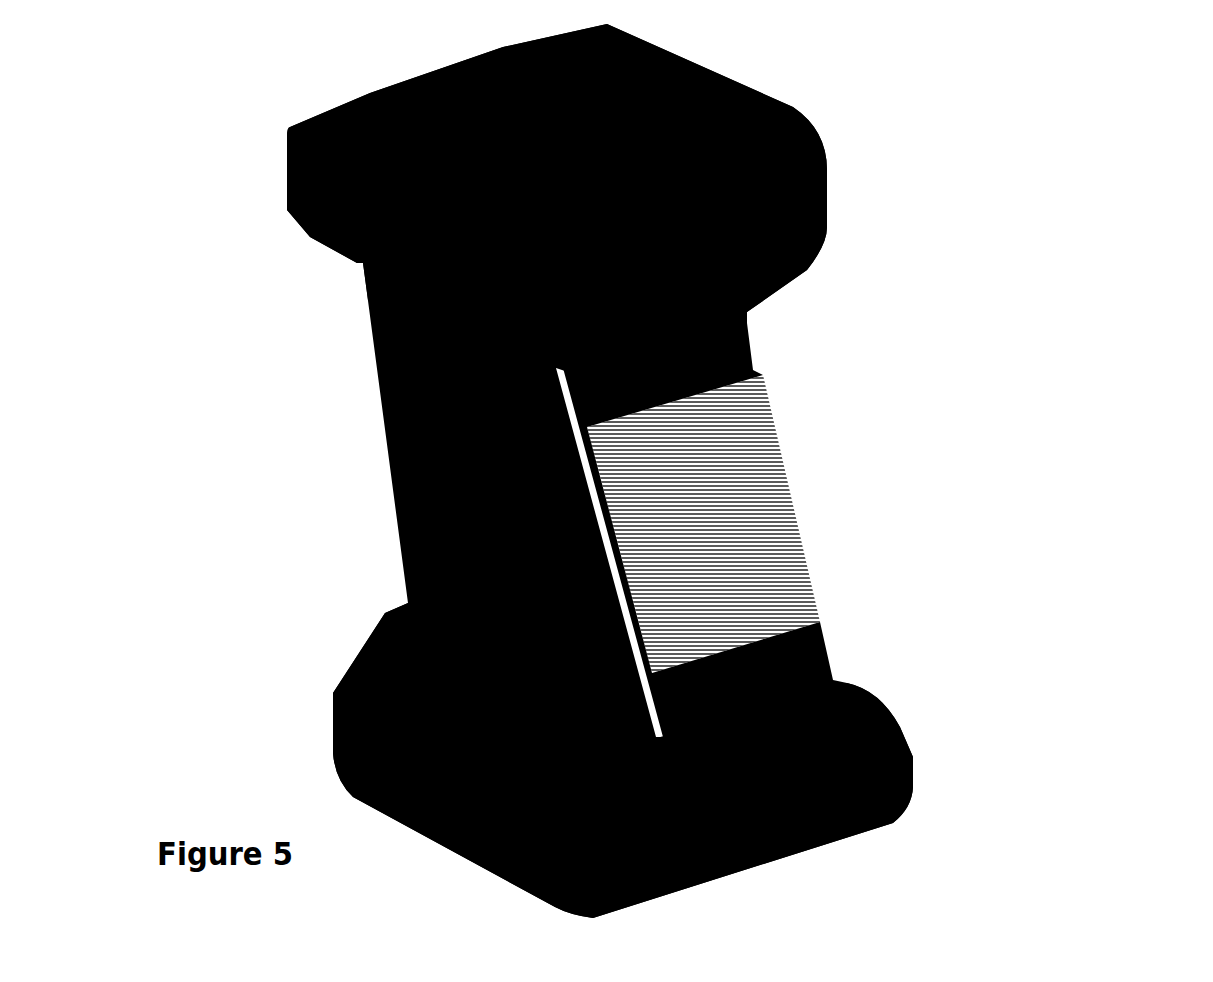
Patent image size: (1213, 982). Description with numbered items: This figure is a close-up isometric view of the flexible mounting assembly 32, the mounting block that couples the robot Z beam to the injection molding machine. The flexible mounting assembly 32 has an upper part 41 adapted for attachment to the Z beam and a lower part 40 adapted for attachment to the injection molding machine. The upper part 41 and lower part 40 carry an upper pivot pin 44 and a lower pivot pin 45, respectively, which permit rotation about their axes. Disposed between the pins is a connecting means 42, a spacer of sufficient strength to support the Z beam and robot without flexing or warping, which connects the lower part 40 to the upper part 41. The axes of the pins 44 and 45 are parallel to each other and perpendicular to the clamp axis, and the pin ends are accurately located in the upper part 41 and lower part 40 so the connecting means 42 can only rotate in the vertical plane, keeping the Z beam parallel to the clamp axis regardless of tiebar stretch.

The flexible mounting assembly 32 is at (980, 218).
The lower part 40 is at (875, 773).
The upper part 41 is at (795, 187).
The connecting means 42 is at (750, 507).
The upper pivot pin 44 is at (705, 292).
The lower pivot pin 45 is at (787, 757).